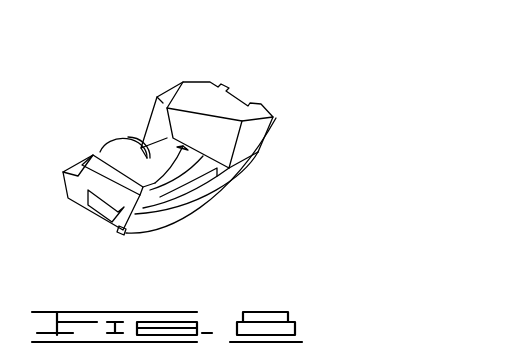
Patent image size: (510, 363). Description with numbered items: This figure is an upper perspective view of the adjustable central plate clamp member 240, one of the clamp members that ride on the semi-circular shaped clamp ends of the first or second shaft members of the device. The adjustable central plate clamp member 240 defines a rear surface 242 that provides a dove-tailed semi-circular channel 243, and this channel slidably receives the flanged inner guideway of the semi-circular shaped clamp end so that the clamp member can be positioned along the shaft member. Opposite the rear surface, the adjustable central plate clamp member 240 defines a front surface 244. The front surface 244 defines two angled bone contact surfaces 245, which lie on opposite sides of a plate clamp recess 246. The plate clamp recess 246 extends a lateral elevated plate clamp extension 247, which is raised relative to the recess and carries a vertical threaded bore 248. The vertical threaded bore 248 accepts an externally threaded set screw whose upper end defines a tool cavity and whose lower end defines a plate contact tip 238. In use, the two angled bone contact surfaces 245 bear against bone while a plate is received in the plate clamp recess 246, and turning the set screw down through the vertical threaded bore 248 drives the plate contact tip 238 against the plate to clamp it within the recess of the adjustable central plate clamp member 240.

The plate contact tip 238 is at (125, 153).
The adjustable central plate clamp member 240 is at (191, 155).
The rear surface 242 is at (152, 233).
The dove-tailed semi-circular channel 243 is at (240, 100).
The front surface 244 is at (203, 207).
The angled bone contact surfaces 245 is at (235, 122).
The plate clamp recess 246 is at (217, 148).
The lateral elevated plate clamp extension 247 is at (158, 108).
The vertical threaded bore 248 is at (140, 148).